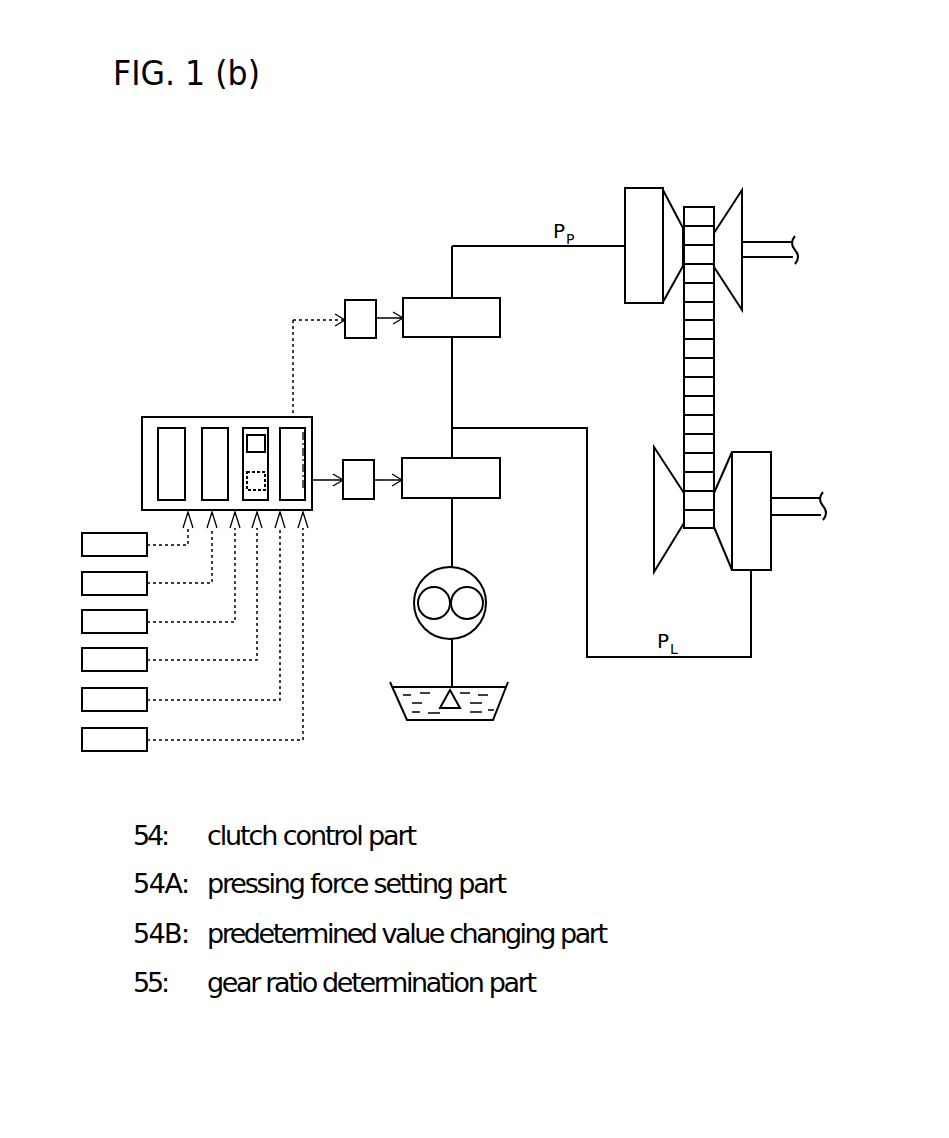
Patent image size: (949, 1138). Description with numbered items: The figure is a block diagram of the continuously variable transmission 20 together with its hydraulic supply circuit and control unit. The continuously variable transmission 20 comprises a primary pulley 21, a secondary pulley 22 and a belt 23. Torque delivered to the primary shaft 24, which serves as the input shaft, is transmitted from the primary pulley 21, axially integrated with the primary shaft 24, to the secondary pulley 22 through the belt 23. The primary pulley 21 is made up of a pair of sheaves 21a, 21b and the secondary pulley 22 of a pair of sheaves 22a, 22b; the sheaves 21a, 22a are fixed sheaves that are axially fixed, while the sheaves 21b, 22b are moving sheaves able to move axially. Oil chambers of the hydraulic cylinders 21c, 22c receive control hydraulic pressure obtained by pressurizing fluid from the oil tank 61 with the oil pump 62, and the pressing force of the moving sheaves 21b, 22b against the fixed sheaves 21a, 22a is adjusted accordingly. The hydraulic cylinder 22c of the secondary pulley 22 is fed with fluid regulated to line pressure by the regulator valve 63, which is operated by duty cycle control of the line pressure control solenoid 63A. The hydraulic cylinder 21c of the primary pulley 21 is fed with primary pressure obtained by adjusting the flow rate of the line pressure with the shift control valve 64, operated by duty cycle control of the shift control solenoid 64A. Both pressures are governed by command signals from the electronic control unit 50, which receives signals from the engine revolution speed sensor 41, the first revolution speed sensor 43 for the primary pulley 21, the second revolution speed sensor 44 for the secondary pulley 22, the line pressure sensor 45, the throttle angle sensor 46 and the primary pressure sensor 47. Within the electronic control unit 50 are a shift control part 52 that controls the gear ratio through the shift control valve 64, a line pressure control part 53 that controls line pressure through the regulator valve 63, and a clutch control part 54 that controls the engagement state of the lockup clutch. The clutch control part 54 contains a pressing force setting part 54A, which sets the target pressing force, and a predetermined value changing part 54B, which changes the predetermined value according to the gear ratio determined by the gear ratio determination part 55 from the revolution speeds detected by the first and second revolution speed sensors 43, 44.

The continuously variable transmission 20 is at (744, 321).
The primary pulley 21 is at (684, 196).
The fixed sheave 21a is at (735, 220).
The moving sheave 21b is at (672, 212).
The hydraulic cylinder 21c is at (630, 206).
The secondary pulley 22 is at (720, 450).
The fixed sheave 22a is at (670, 555).
The moving sheave 22b is at (718, 545).
The hydraulic cylinder 22c is at (753, 548).
The belt 23 is at (717, 351).
The primary shaft 24 is at (764, 237).
The engine revolution speed sensor 41 is at (82, 545).
The first revolution speed sensor 43 is at (82, 583).
The second revolution speed sensor 44 is at (82, 621).
The line pressure sensor 45 is at (82, 659).
The throttle angle sensor 46 is at (82, 699).
The primary pressure sensor 47 is at (82, 739).
The electronic control unit 50 is at (142, 428).
The shift control part 52 is at (158, 478).
The line pressure control part 53 is at (200, 428).
The clutch control part 54 is at (243, 428).
The pressing force setting part 54A is at (253, 435).
The predetermined value changing part 54B is at (267, 480).
The gear ratio determination part 55 is at (292, 428).
The oil tank 61 is at (505, 700).
The oil pump 62 is at (480, 578).
The regulator valve 63 is at (430, 458).
The line pressure control solenoid 63A is at (362, 500).
The shift control valve 64 is at (500, 325).
The shift control solenoid 64A is at (360, 338).